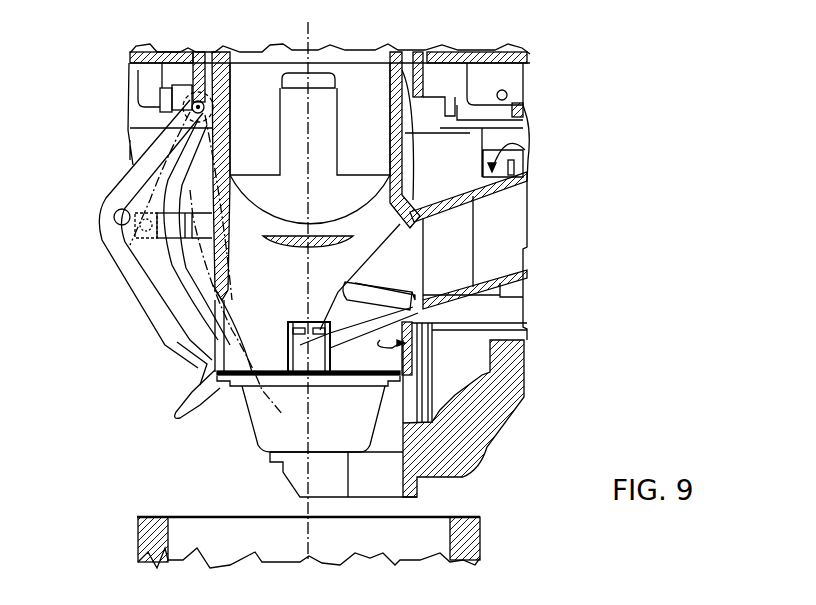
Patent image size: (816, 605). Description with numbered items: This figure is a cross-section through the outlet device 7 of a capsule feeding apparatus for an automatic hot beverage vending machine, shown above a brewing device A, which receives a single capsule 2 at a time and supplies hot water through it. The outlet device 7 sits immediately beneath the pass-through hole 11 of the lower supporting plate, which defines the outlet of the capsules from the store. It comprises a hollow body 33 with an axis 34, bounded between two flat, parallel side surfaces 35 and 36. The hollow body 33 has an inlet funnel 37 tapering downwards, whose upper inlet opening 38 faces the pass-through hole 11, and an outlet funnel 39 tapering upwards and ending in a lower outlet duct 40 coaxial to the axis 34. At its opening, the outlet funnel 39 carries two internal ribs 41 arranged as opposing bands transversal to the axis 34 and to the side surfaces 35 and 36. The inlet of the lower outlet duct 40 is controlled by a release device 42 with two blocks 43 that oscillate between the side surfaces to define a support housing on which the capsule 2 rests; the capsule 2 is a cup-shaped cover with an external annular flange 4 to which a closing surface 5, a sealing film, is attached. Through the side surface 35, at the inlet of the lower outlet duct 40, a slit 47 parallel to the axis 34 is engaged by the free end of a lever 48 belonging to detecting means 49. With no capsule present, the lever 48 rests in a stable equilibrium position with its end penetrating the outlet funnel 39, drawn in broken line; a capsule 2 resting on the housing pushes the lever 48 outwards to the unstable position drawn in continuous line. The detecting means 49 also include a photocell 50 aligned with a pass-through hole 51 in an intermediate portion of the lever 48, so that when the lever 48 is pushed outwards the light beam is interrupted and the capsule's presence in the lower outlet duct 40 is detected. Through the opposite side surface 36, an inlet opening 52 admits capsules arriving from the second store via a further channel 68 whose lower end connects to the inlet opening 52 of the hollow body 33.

The capsule 2 is at (363, 440).
The external annular flange 4 is at (347, 384).
The closing surface 5 is at (356, 360).
The outlet device 7 is at (555, 132).
The pass-through hole 11 is at (240, 58).
The hollow body 33 is at (520, 116).
The axis 34 is at (313, 37).
The side surface 35 is at (215, 56).
The side surface 36 is at (402, 62).
The inlet funnel 37 is at (272, 140).
The upper inlet opening 38 is at (323, 85).
The outlet funnel 39 is at (228, 268).
The lower outlet duct 40 is at (412, 352).
The internal ribs 41 is at (300, 246).
The release device 42 is at (318, 313).
The blocks 43 is at (298, 345).
The slit 47 is at (215, 305).
The lever 48 is at (122, 195).
The detecting means 49 is at (100, 256).
The photocell 50 is at (118, 250).
The pass-through hole 51 is at (115, 217).
The inlet opening 52 is at (402, 234).
The further channel 68 is at (528, 142).
The brewing device A is at (150, 522).